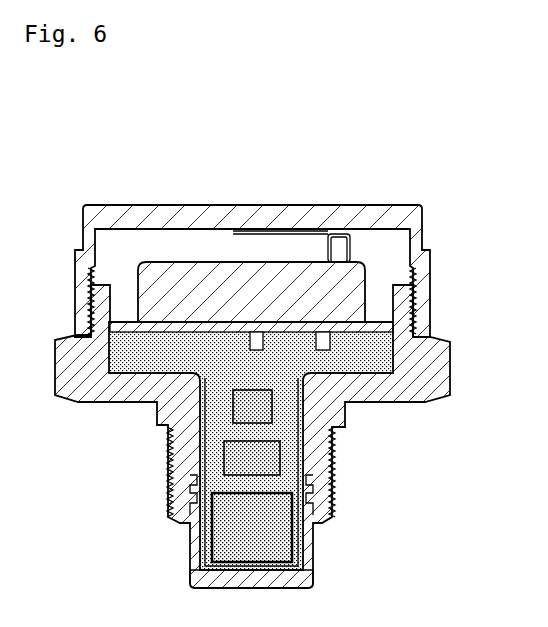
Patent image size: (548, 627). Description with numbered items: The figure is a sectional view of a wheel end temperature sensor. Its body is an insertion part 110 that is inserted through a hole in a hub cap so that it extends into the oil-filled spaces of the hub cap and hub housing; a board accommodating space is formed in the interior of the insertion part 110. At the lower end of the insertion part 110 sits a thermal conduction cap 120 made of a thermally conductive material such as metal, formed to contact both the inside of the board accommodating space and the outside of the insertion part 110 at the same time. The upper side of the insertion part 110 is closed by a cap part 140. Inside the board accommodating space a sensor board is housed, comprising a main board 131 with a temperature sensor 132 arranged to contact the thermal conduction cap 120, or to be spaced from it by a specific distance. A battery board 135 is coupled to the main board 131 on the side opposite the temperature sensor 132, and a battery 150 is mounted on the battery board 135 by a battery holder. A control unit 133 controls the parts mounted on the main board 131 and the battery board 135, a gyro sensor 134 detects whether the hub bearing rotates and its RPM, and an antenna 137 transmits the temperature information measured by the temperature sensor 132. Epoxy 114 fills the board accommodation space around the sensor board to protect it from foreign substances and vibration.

The insertion part 110 is at (333, 485).
The epoxy 114 is at (305, 540).
The thermal conduction cap 120 is at (305, 578).
The main board 131 is at (290, 430).
The temperature sensor 132 is at (212, 540).
The control unit 133 is at (224, 455).
The gyro sensor 134 is at (233, 412).
The battery board 135 is at (380, 328).
The antenna 137 is at (355, 249).
The cap part 140 is at (381, 205).
The battery 150 is at (350, 299).